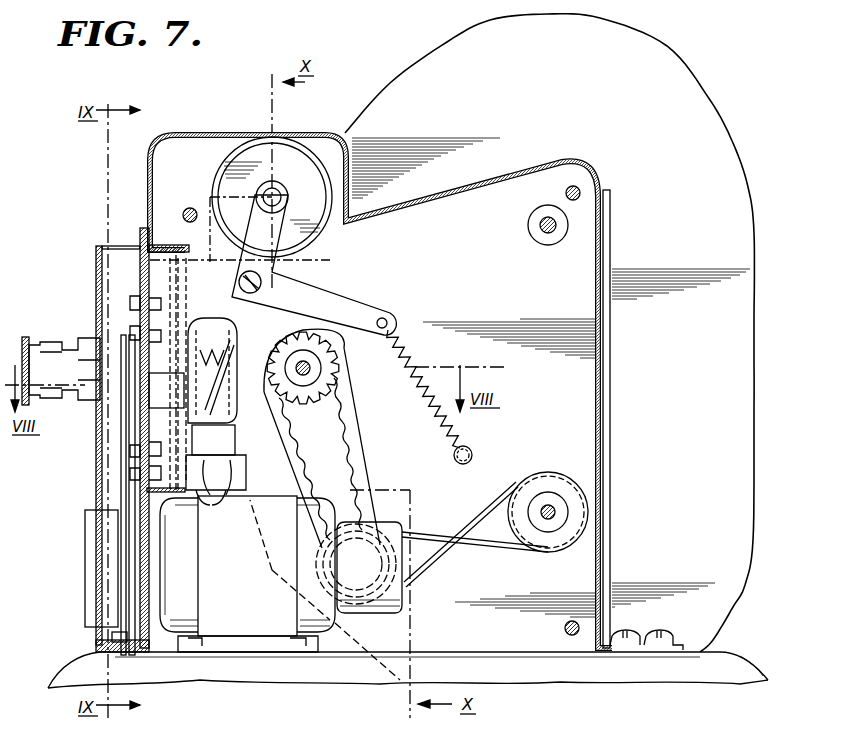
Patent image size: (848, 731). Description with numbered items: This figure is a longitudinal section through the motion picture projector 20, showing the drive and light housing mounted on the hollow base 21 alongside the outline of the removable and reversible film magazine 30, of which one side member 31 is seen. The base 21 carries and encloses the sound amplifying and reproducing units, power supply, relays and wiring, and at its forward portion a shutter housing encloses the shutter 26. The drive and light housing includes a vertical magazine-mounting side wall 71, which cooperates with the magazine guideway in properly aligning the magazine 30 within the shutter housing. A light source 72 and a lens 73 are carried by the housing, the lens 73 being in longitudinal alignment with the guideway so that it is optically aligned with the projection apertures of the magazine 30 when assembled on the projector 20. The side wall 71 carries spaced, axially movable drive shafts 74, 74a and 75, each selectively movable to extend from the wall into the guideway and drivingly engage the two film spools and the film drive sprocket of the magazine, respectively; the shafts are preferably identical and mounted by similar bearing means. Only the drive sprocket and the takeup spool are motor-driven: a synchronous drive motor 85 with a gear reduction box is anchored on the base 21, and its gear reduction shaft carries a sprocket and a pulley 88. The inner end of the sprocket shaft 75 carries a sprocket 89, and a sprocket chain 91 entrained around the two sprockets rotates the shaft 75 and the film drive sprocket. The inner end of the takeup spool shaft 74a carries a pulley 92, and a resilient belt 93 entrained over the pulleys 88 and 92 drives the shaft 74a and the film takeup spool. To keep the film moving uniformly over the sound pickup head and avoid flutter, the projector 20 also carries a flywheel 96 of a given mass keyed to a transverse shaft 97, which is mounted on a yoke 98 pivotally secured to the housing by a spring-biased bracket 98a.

The motion picture projector 20 is at (209, 133).
The hollow base 21 is at (718, 678).
The shutter 26 is at (168, 282).
The film magazine 30 is at (448, 46).
The side member 31 is at (712, 126).
The magazine-mounting side wall 71 is at (582, 335).
The light source 72 is at (225, 345).
The lens 73 is at (54, 345).
The drive shaft 74 is at (546, 228).
The film takeup spool shaft 74a is at (548, 505).
The sprocket shaft 75 is at (310, 368).
The synchronous drive motor 85 is at (228, 610).
The pulley 88 is at (395, 590).
The sprocket 89 is at (320, 384).
The sprocket chain 91 is at (360, 440).
The pulley 92 is at (544, 542).
The resilient belt 93 is at (475, 534).
The flywheel 96 is at (322, 222).
The transverse shaft 97 is at (280, 196).
The yoke 98 is at (268, 236).
The spring-biased bracket 98a is at (345, 305).